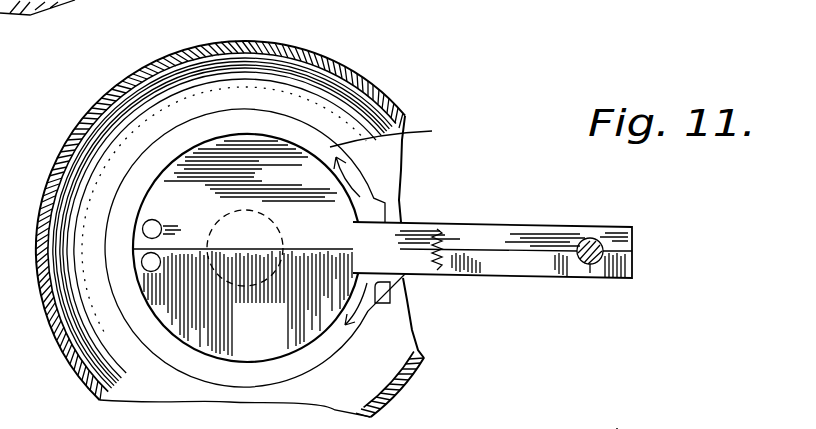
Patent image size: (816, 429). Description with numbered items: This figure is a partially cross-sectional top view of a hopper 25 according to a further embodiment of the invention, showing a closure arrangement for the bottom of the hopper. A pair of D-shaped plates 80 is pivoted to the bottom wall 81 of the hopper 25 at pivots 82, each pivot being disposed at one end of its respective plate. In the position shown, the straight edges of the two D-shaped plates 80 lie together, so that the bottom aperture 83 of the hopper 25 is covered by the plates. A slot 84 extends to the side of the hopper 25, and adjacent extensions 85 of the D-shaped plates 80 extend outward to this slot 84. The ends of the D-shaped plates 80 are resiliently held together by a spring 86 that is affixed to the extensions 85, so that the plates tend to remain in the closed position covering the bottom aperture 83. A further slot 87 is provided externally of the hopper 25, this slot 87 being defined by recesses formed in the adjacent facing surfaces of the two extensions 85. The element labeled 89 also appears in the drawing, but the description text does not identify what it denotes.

The hopper 25 is at (341, 64).
The D-shaped plates 80 is at (313, 187).
The bottom wall 81 is at (331, 150).
The pivots 82 is at (160, 258).
The bottom aperture 83 is at (243, 287).
The slot 84 is at (376, 303).
The extensions 85 is at (510, 225).
The spring 86 is at (450, 237).
The slot 87 is at (590, 265).
The support member 89 is at (620, 428).